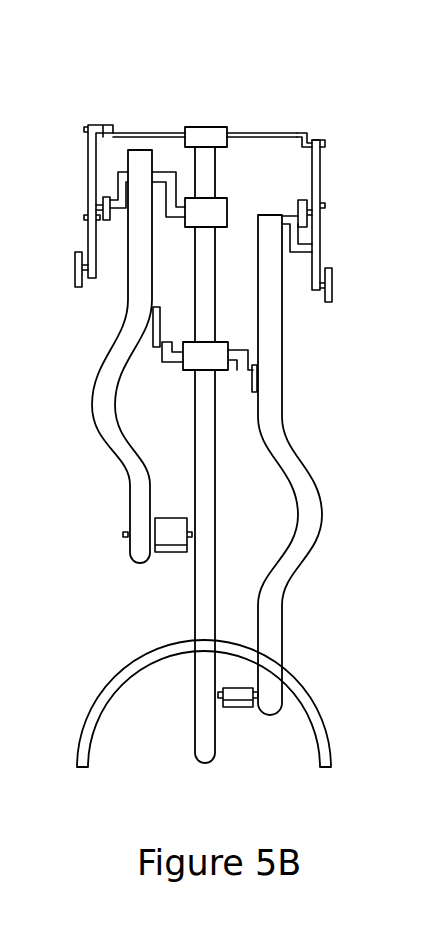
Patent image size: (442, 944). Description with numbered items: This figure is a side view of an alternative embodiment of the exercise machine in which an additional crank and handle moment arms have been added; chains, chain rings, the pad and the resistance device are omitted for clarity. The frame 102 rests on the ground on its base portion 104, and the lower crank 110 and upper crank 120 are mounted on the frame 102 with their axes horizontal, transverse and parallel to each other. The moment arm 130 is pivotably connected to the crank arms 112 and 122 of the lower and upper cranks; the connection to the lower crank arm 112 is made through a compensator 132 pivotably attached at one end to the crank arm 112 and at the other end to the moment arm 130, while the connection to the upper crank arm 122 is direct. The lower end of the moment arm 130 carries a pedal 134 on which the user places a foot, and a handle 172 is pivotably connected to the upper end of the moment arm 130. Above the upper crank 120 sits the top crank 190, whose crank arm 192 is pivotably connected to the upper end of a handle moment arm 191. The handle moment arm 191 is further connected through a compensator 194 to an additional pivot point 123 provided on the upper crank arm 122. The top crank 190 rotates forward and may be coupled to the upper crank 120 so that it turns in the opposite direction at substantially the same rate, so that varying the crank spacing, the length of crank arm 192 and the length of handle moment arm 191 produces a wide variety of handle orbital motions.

The frame 102 is at (205, 462).
The base portion 104 is at (316, 749).
The lower crank 110 is at (155, 346).
The right crank arm of lower crank 112 is at (256, 369).
The upper crank 120 is at (203, 216).
The right crank arm of upper crank 122 is at (244, 225).
The additional pivot point 123 is at (121, 200).
The moment arm 130 is at (140, 235).
The compensator 132 is at (254, 372).
The pedal 134 is at (241, 697).
The handle 172 is at (76, 268).
The top crank 190 is at (204, 127).
The handle moment arm 191 is at (89, 155).
The crank arm of top crank 192 is at (308, 143).
The compensator 194 is at (105, 198).